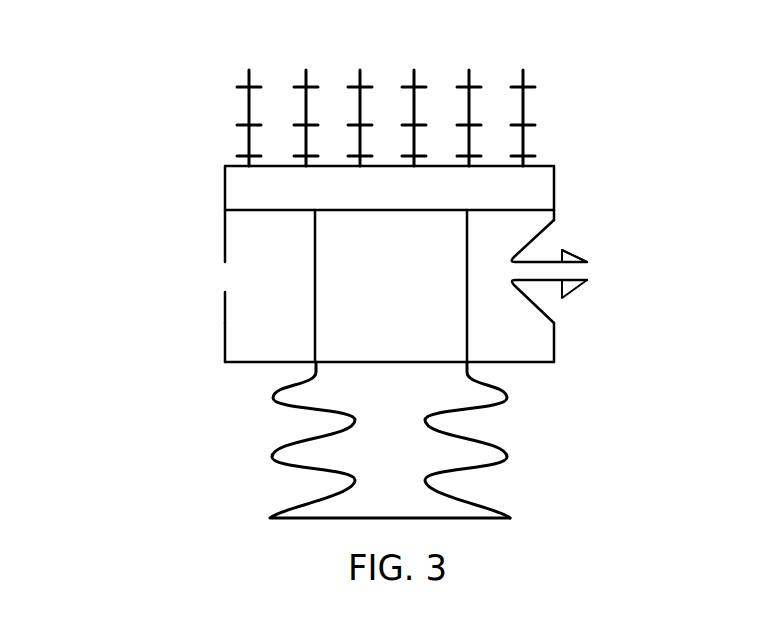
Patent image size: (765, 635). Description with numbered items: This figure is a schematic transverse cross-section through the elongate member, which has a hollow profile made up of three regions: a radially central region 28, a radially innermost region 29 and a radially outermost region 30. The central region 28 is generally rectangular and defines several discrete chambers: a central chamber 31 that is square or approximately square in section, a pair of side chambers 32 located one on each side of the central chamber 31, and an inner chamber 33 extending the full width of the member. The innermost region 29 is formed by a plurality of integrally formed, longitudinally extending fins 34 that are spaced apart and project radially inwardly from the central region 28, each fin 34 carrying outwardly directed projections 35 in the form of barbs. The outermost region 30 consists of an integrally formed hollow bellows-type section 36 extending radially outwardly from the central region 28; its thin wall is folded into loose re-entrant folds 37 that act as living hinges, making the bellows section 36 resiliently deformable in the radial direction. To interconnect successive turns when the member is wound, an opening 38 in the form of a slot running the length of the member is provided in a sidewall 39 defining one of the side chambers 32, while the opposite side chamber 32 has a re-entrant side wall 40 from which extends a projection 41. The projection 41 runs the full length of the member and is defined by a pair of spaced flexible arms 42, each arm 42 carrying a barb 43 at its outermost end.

The radially central region 28 is at (100, 289).
The radially innermost region 29 is at (145, 135).
The radially outermost region 30 is at (130, 465).
The central chamber 31 is at (406, 297).
The side chamber 32 is at (247, 250).
The inner chamber 33 is at (530, 179).
The fin 34 is at (360, 72).
The projection 35 is at (414, 82).
The bellows-type section 36 is at (318, 467).
The re-entrant fold 37 is at (427, 420).
The opening 38 is at (223, 292).
The sidewall 39 is at (222, 323).
The re-entrant side wall 40 is at (553, 323).
The projection 41 is at (600, 271).
The flexible arm 42 is at (533, 262).
The barb 43 is at (589, 262).